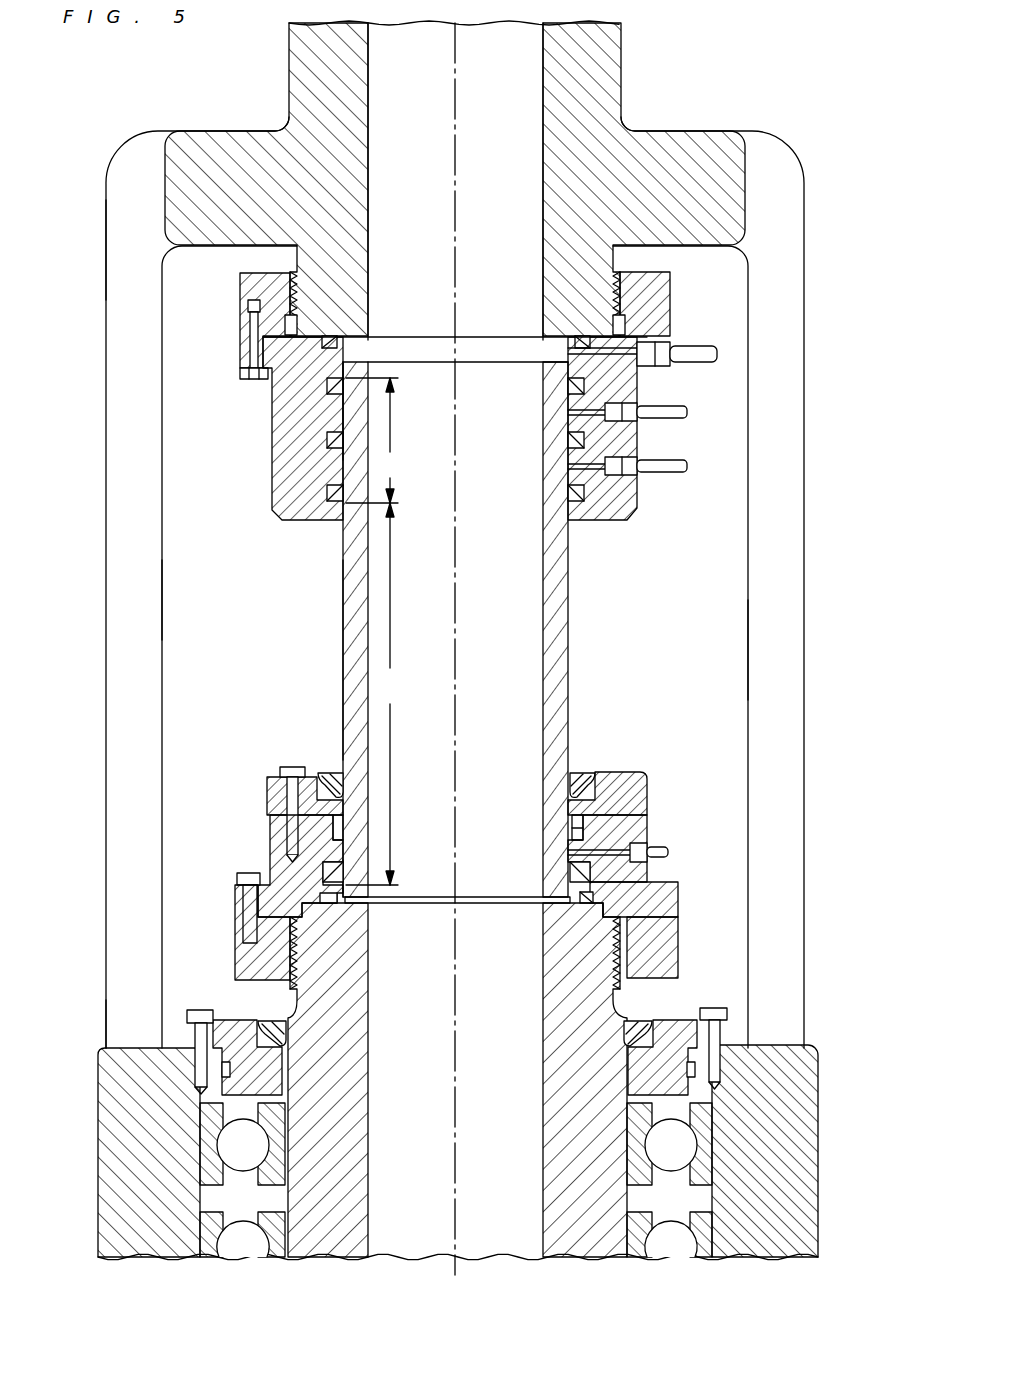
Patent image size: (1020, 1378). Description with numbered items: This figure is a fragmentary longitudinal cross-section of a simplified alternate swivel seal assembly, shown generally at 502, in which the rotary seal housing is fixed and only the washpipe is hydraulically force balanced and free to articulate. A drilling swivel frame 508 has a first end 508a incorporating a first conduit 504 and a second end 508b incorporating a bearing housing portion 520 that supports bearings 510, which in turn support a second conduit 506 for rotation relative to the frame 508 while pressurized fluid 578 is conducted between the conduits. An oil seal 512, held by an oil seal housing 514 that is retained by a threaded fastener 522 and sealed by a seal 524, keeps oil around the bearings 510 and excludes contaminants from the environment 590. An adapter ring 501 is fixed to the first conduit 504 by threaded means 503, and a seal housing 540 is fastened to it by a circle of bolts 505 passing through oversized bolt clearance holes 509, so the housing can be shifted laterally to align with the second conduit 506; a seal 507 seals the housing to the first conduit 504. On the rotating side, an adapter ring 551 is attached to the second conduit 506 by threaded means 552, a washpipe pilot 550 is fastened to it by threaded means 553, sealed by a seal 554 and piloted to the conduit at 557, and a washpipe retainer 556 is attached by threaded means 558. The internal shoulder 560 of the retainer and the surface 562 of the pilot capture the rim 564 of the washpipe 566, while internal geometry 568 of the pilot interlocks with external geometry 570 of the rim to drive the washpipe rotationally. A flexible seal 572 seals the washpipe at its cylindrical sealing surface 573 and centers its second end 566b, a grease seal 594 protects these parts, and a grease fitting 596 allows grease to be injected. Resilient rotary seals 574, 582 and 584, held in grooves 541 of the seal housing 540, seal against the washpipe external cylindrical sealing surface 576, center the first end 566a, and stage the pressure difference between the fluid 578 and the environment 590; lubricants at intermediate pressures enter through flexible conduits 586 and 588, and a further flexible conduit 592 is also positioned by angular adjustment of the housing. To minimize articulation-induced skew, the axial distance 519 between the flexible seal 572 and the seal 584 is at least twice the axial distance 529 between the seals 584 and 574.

The adapter ring 501 is at (240, 300).
The swivel seal assembly 502 is at (238, 600).
The threaded means 503 is at (288, 300).
The first conduit 504 is at (580, 44).
The circle of bolts 505 is at (240, 374).
The second conduit 506 is at (332, 999).
The seal 507 is at (336, 338).
The frame 508 is at (125, 572).
The first end 508a is at (218, 78).
The second end 508b is at (100, 1046).
The oversized bolt clearance holes 509 is at (253, 382).
The bearings 510 is at (690, 1235).
The oil seal 512 is at (640, 1035).
The oil seal housing 514 is at (735, 1040).
The axial distance 519 is at (377, 694).
The bearing housing portion 520 is at (150, 1240).
The threaded fastener 522 is at (628, 1012).
The seal 524 is at (650, 1063).
The axial distance 529 is at (376, 440).
The seal housing 540 is at (630, 505).
The grooves 541 is at (327, 492).
The washpipe pilot 550 is at (275, 866).
The adapter ring 551 is at (235, 947).
The threaded means 552 is at (640, 950).
The threaded means 553 is at (237, 879).
The seal 554 is at (605, 918).
The washpipe retainer 556 is at (267, 797).
The pilot location 557 is at (605, 905).
The threaded means 558 is at (283, 770).
The internal shoulder 560 is at (572, 828).
The surface 562 is at (570, 836).
The rim 564 is at (343, 827).
The washpipe 566 is at (352, 727).
The first end 566a is at (360, 447).
The second end 566b is at (360, 872).
The internal geometry 568 is at (340, 834).
The external geometry 570 is at (592, 836).
The flexible seal 572 is at (568, 879).
The washpipe cylindrical sealing surface 573 is at (650, 889).
The resilient rotary seal 574 is at (567, 380).
The washpipe external cylindrical sealing surface 576 is at (343, 705).
The fluid 578 is at (455, 181).
The resilient rotary seal 582 is at (567, 438).
The resilient rotary seal 584 is at (567, 492).
The flexible conduit 586 is at (665, 408).
The flexible conduit 588 is at (665, 460).
The environment 590 is at (705, 650).
The flexible conduit 592 is at (665, 345).
The grease seal 594 is at (585, 774).
The port 596 is at (660, 852).